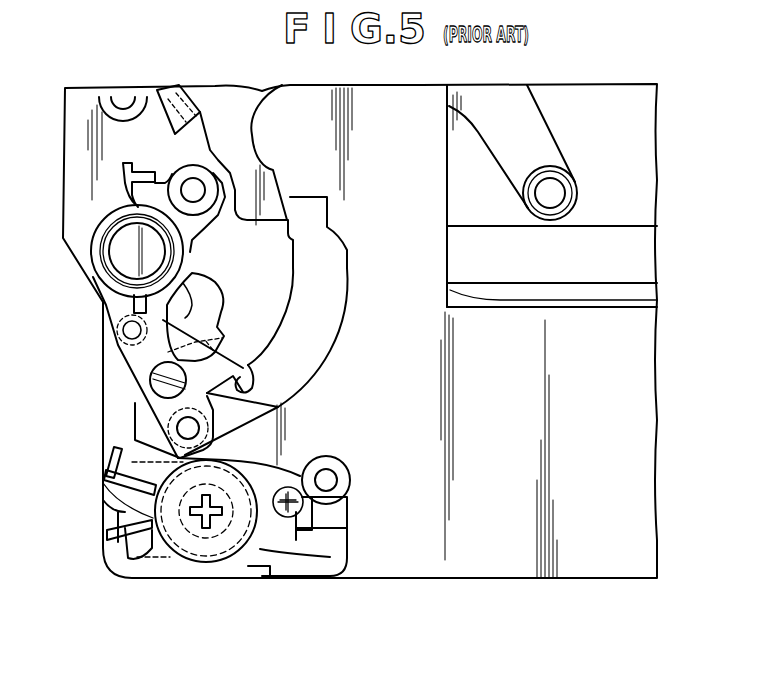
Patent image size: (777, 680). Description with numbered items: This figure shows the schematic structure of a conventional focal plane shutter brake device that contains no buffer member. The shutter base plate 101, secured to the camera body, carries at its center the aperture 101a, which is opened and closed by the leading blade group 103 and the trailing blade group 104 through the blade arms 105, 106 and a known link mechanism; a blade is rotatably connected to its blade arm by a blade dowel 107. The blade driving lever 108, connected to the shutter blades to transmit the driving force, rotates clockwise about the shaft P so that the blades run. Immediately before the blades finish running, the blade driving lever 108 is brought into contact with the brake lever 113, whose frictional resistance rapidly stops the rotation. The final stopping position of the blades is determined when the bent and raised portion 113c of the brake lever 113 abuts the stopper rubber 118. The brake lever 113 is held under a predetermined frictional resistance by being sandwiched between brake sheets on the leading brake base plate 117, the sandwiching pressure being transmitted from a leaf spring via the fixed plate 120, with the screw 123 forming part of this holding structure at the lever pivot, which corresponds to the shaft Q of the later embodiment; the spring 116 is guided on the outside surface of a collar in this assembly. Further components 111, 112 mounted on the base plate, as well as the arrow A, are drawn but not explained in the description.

The shutter base plate 101 is at (619, 550).
The aperture 101a is at (447, 266).
The leading blade group 103 is at (582, 297).
The trailing blade group 104 is at (628, 200).
The blade arm 105 is at (253, 417).
The trailing blade arm 106 is at (530, 133).
The blade dowel 107 is at (547, 195).
The blade driving lever 108 is at (140, 360).
The bolt / pivot pin 111 is at (176, 170).
The pivot ring (pivot P) 112 is at (105, 276).
The brake lever 113 is at (148, 433).
The bent and raised portion 113c is at (327, 530).
The spring 116 is at (100, 530).
The leading brake base plate 117 is at (337, 513).
The stopper rubber 118 is at (346, 485).
The fixed plate 120 is at (135, 572).
The screw 123 is at (180, 543).
The shaft P is at (130, 251).
The shaft Q is at (215, 522).
The direction A is at (193, 585).